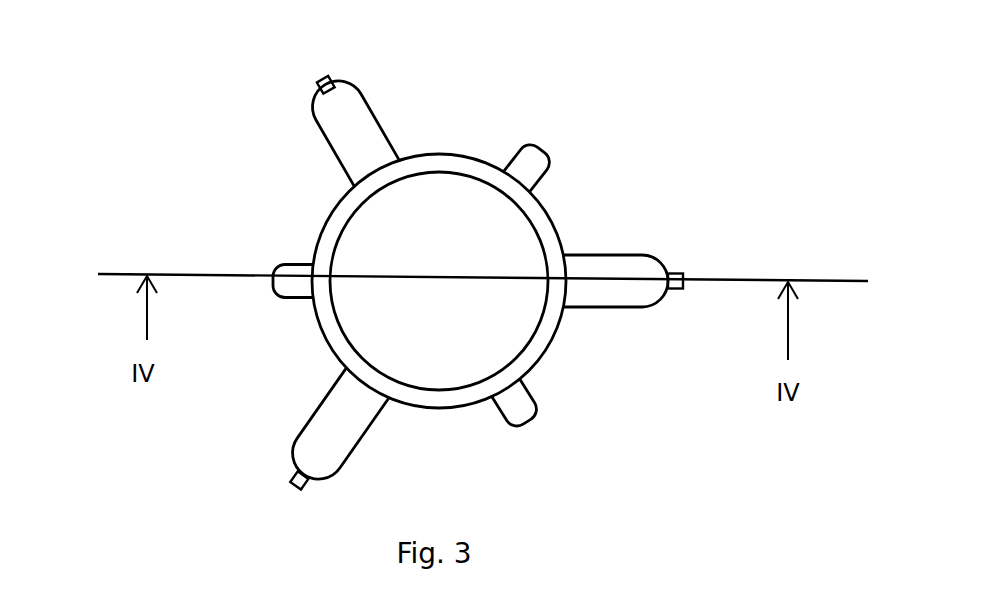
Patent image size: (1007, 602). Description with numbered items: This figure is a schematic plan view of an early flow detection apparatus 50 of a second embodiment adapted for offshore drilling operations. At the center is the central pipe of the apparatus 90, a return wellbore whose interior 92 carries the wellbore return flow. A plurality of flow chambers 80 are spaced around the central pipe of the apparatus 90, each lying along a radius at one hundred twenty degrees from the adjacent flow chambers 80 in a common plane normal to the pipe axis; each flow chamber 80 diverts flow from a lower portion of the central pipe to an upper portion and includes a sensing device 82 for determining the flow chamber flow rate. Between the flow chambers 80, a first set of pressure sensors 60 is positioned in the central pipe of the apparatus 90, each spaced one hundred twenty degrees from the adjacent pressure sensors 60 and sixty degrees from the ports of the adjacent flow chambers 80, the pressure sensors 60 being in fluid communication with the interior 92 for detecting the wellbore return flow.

The early flow detection apparatus 50 is at (208, 113).
The first set of pressure sensors 60 is at (295, 268).
The flow chamber 80 is at (360, 115).
The sensing device 82 is at (318, 82).
The central pipe of the apparatus 90 is at (455, 165).
The interior of the return wellbore 92 is at (502, 240).